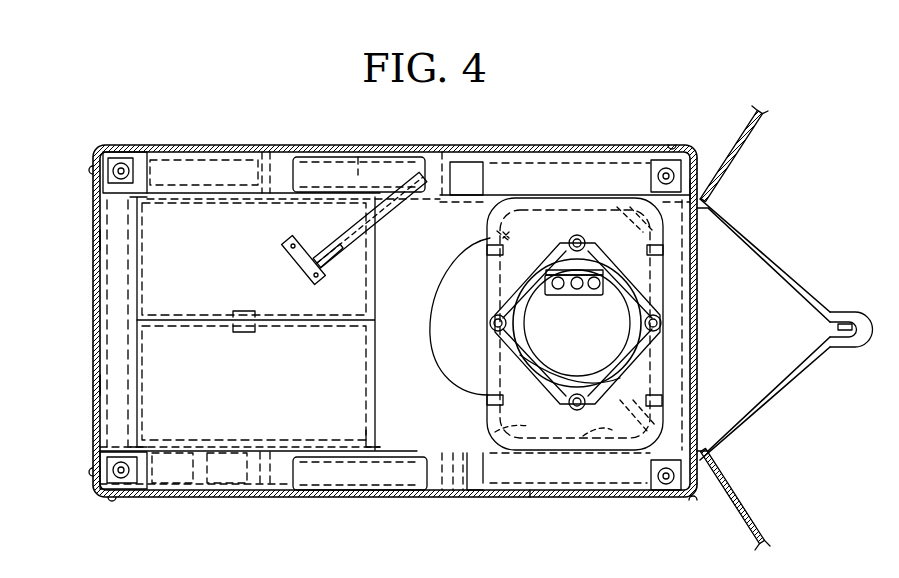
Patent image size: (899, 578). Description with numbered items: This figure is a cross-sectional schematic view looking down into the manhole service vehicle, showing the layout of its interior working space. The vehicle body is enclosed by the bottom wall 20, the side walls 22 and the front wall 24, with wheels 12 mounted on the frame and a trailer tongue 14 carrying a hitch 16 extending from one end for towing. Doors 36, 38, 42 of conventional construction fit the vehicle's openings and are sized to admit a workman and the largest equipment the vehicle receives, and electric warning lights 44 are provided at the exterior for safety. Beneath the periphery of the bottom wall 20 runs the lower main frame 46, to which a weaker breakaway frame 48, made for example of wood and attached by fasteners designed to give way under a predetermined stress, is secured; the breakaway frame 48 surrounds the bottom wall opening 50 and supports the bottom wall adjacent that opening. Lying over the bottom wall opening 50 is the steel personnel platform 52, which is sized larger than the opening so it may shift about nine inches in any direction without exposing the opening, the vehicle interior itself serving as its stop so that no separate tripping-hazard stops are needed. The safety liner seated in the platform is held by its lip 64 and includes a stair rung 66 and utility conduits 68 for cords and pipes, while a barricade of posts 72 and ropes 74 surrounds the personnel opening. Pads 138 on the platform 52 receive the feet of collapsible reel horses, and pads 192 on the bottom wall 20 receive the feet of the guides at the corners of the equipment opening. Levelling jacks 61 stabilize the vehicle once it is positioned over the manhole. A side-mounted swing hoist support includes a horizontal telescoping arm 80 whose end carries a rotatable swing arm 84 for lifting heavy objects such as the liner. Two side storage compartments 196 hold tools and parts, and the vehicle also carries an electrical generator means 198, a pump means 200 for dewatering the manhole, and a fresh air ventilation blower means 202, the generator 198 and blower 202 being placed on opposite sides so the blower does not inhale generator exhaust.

The wheels 12 is at (345, 180).
The trailer tongue 14 is at (767, 398).
The hitch 16 is at (830, 312).
The bottom wall 20 is at (410, 306).
The side walls 22 is at (171, 146).
The front wall 24 is at (697, 185).
The front door 36 is at (740, 165).
The rear door 38 is at (94, 240).
The side door 42 is at (545, 497).
The electric warning lights 44 is at (90, 168).
The lower main frame 46 is at (440, 200).
The breakaway frame 48 is at (698, 381).
The bottom wall opening 50 is at (480, 263).
The personnel platform 52 is at (457, 352).
The levelling jacks 61 is at (118, 165).
The lip 64 is at (548, 380).
The stair rung 66 is at (599, 294).
The utility conduits 68 is at (590, 290).
The posts 72 is at (577, 235).
The ropes 74 is at (543, 262).
The horizontal telescoping arm 80 is at (333, 250).
The swing arm 84 is at (303, 259).
The pads 138 is at (488, 250).
The pads 192 is at (374, 207).
The side storage compartments 196 is at (256, 160).
The electrical generator means 198 is at (213, 160).
The pump means 200 is at (163, 470).
The fresh air ventilation blower means 202 is at (233, 465).